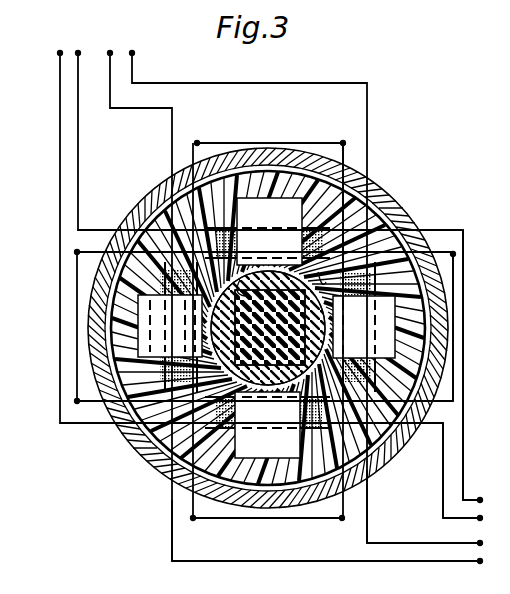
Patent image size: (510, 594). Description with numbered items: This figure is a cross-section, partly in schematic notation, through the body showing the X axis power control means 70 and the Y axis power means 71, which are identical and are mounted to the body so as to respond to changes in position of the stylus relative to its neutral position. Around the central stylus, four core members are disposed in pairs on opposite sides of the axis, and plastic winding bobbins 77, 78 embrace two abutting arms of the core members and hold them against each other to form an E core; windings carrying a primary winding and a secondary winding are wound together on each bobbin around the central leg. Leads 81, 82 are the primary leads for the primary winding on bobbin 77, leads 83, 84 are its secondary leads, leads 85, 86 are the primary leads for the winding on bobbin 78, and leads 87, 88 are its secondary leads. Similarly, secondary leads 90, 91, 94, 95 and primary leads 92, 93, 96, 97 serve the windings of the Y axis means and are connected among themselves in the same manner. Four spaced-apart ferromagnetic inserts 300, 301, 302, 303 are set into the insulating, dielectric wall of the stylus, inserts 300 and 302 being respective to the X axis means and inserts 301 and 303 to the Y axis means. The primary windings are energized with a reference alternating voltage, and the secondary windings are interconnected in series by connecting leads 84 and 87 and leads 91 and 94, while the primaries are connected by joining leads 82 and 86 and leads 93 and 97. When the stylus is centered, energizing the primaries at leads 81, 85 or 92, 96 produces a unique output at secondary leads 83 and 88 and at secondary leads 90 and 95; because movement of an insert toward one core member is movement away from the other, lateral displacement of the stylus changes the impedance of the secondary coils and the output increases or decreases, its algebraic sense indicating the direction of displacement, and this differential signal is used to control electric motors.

The X axis power control means 70 is at (386, 333).
The Y axis power means 71 is at (265, 222).
The plastic winding bobbin 77 is at (165, 390).
The plastic winding bobbin 78 is at (410, 383).
The primary lead 81 is at (172, 525).
The primary lead 82 is at (193, 518).
The secondary lead 83 is at (110, 53).
The secondary lead 84 is at (197, 143).
The primary lead 85 is at (367, 503).
The primary lead 86 is at (342, 518).
The secondary lead 87 is at (343, 143).
The secondary lead 88 is at (132, 53).
The secondary lead 90 is at (78, 53).
The secondary lead 91 is at (77, 268).
The primary lead 92 is at (440, 232).
The primary lead 93 is at (453, 258).
The secondary lead 94 is at (105, 425).
The secondary lead 95 is at (60, 53).
The primary lead 96 is at (443, 437).
The primary lead 97 is at (437, 403).
The ferromagnetic insert 300 is at (150, 440).
The ferromagnetic insert 301 is at (300, 378).
The ferromagnetic insert 302 is at (333, 274).
The ferromagnetic insert 303 is at (226, 282).